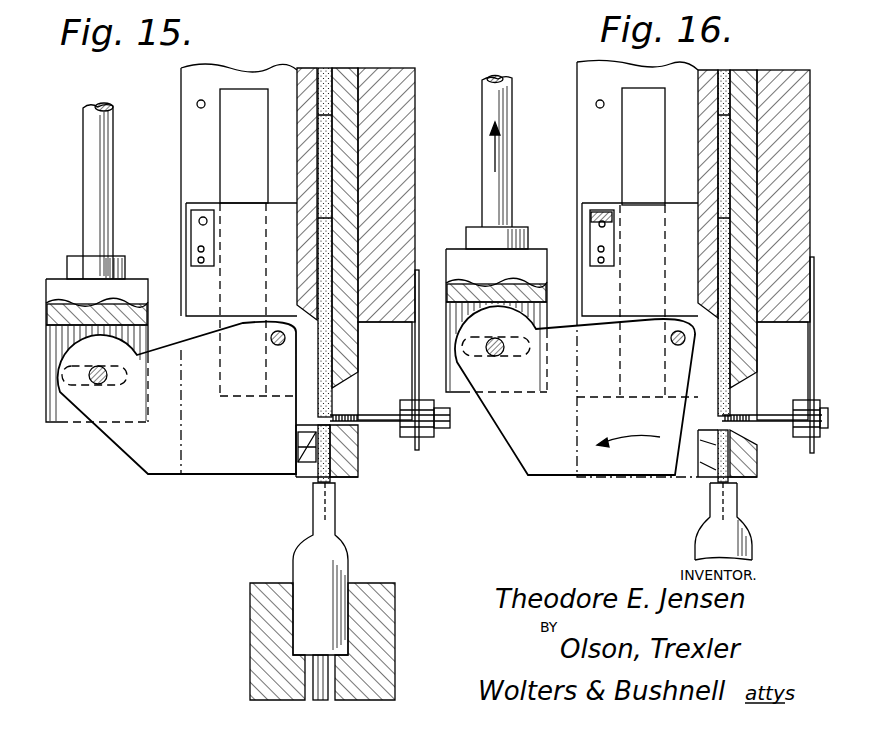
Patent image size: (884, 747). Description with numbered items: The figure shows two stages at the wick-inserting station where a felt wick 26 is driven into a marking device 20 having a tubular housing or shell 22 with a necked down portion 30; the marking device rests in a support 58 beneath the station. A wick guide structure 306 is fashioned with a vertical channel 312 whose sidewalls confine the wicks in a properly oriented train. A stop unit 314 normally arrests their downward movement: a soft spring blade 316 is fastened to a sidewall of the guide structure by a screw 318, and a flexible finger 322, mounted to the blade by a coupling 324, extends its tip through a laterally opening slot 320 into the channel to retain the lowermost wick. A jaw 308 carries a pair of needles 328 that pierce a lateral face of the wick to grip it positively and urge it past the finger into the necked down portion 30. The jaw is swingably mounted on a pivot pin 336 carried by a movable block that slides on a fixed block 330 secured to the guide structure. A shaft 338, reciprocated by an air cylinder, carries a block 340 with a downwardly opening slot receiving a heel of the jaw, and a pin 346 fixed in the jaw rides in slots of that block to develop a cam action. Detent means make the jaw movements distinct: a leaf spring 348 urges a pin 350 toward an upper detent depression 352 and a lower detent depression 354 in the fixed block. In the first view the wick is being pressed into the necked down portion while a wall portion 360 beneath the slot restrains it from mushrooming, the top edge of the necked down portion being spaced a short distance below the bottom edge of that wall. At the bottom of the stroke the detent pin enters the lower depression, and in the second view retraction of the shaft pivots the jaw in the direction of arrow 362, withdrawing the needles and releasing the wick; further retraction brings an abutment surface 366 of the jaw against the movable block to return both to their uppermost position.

In FIG. 15, the marking device 20 is at (293, 562).
In FIG. 16, the marking device 20 is at (694, 546).
In FIG. 15, the tubular housing or shell 22 is at (348, 568).
In FIG. 15, the felt wick 26 is at (336, 512).
In FIG. 16, the felt wick 26 is at (722, 350).
In FIG. 15, the necked down portion 30 is at (312, 512).
In FIG. 15, the bottle support block 58 is at (395, 641).
In FIG. 15, the wick guide structure 306 is at (420, 66).
In FIG. 16, the wick guide structure 306 is at (783, 70).
In FIG. 15, the jaw 308 is at (135, 447).
In FIG. 16, the jaw 308 is at (557, 430).
In FIG. 15, the vertical channel 312 is at (327, 68).
In FIG. 16, the vertical channel 312 is at (725, 70).
In FIG. 15, the stop unit 314 is at (433, 446).
In FIG. 16, the stop unit 314 is at (434, 447).
In FIG. 15, the soft spring blade 316 is at (319, 410).
In FIG. 15, the screw 318 is at (422, 268).
In FIG. 16, the screw 318 is at (430, 262).
In FIG. 15, the slot 320 is at (362, 378).
In FIG. 16, the slot 320 is at (733, 381).
In FIG. 15, the flexible finger 322 is at (346, 413).
In FIG. 16, the flexible finger 322 is at (703, 172).
In FIG. 15, the coupling 324 is at (437, 433).
In FIG. 16, the coupling 324 is at (640, 428).
In FIG. 15, the needles 328 is at (300, 452).
In FIG. 16, the needles 328 is at (700, 450).
In FIG. 15, the fixed block 330 is at (293, 89).
In FIG. 16, the fixed block 330 is at (687, 83).
In FIG. 15, the pivot pin 336 is at (274, 344).
In FIG. 16, the pivot pin 336 is at (680, 322).
In FIG. 15, the shaft 338 is at (88, 125).
In FIG. 16, the shaft 338 is at (482, 100).
In FIG. 15, the block 340 is at (58, 278).
In FIG. 16, the block 340 is at (527, 283).
In FIG. 15, the pin 346 is at (93, 383).
In FIG. 16, the pin 346 is at (497, 357).
In FIG. 15, the leaf spring 348 is at (195, 236).
In FIG. 16, the leaf spring 348 is at (592, 246).
In FIG. 15, the pin 350 is at (222, 208).
In FIG. 16, the pin 350 is at (627, 205).
In FIG. 15, the upper detent depression 352 is at (198, 101).
In FIG. 16, the upper detent depression 352 is at (596, 101).
In FIG. 16, the lower detent depression 354 is at (580, 222).
In FIG. 15, the wall portion 360 is at (357, 450).
In FIG. 16, the wall portion 360 is at (747, 457).
In FIG. 16, the arrow 362 is at (648, 466).
In FIG. 16, the abutment surface 366 is at (593, 325).